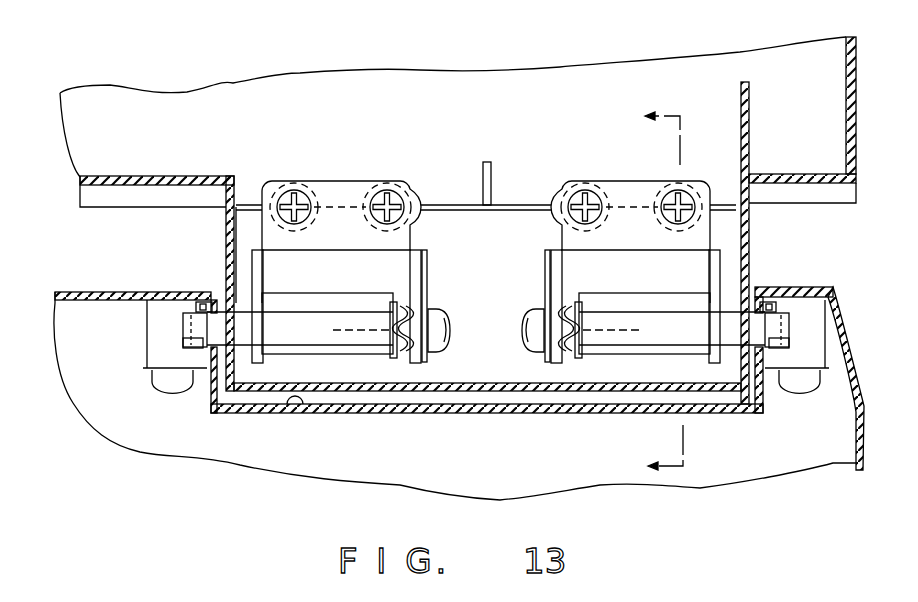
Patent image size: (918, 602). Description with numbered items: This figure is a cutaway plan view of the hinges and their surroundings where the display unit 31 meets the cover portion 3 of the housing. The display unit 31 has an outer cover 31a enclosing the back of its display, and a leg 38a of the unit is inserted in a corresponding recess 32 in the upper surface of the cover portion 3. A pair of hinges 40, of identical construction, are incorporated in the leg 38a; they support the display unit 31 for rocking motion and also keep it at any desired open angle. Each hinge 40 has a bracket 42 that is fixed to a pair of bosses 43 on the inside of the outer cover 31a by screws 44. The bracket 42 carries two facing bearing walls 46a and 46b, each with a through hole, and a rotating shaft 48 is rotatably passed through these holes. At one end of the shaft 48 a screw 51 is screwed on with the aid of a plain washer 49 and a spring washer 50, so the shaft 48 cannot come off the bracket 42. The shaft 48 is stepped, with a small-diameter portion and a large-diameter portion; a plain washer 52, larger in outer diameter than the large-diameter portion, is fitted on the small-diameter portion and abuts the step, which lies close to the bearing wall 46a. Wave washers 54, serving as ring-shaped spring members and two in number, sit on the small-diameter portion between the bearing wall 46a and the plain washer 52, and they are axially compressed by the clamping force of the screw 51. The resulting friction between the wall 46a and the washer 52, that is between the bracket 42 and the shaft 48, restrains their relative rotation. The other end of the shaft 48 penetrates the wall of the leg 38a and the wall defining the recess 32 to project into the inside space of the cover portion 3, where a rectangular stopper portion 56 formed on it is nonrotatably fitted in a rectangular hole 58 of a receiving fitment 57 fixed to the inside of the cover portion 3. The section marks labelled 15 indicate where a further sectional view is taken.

The cover portion 3 is at (851, 382).
The section line 15 is at (669, 294).
The display unit 31 is at (835, 134).
The outer cover 31a is at (473, 373).
The recess 32 is at (305, 408).
The leg 38a is at (221, 254).
The hinge 40 is at (258, 236).
The bracket 42 is at (337, 193).
The boss 43 is at (283, 182).
The screw 44 is at (279, 197).
The bearing wall 46a is at (423, 258).
The bearing wall 46b is at (257, 282).
The rotating shaft 48 is at (357, 338).
The plain washer 49 is at (427, 298).
The spring washer 50 is at (519, 339).
The screw 51 is at (518, 315).
The plain washer 52 is at (387, 345).
The wave washer 54 is at (402, 305).
The stopper portion 56 is at (185, 320).
The receiving fitment 57 is at (164, 370).
The rectangular hole 58 is at (187, 341).